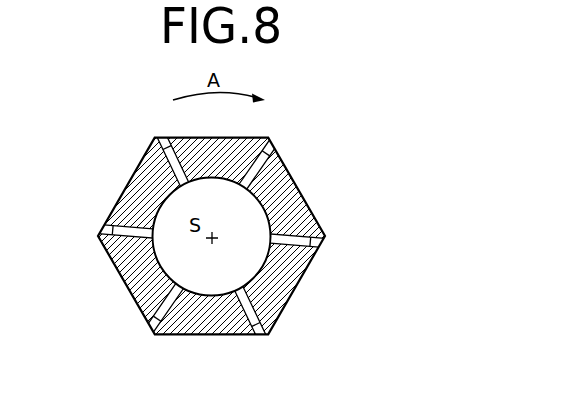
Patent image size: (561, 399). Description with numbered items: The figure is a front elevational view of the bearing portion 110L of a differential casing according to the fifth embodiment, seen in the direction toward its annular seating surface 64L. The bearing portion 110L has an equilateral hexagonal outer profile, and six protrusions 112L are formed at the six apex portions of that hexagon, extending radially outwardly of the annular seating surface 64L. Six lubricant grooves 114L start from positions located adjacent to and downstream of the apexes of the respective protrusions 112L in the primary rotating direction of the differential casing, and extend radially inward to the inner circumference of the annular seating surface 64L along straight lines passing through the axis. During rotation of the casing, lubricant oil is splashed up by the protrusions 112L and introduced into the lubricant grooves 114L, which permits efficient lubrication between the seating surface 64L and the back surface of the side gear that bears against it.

The bearing portion 110L is at (234, 245).
The protrusions 112L is at (157, 143).
The lubricant grooves 114L is at (177, 158).
The seating surface 64L is at (213, 241).